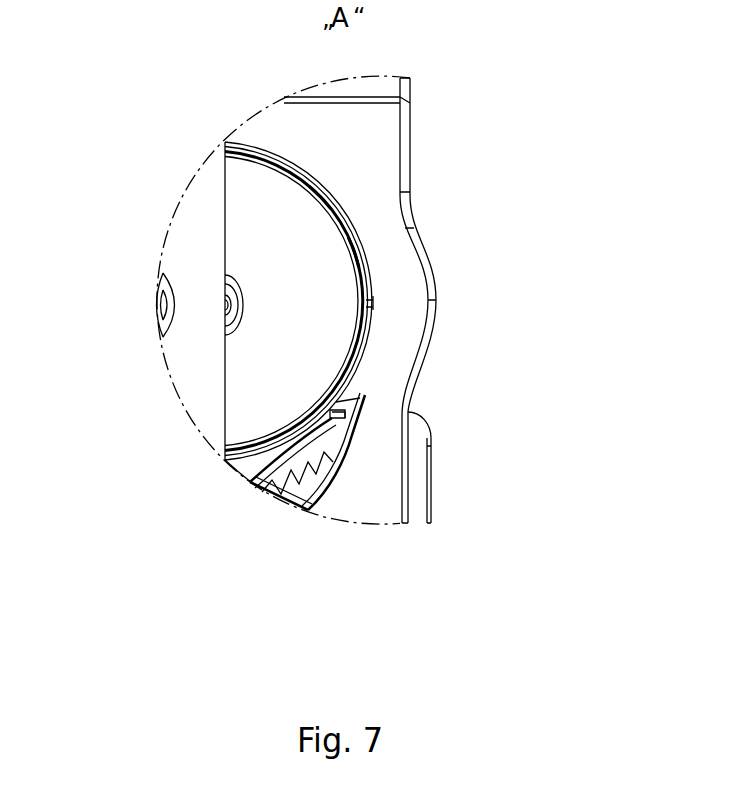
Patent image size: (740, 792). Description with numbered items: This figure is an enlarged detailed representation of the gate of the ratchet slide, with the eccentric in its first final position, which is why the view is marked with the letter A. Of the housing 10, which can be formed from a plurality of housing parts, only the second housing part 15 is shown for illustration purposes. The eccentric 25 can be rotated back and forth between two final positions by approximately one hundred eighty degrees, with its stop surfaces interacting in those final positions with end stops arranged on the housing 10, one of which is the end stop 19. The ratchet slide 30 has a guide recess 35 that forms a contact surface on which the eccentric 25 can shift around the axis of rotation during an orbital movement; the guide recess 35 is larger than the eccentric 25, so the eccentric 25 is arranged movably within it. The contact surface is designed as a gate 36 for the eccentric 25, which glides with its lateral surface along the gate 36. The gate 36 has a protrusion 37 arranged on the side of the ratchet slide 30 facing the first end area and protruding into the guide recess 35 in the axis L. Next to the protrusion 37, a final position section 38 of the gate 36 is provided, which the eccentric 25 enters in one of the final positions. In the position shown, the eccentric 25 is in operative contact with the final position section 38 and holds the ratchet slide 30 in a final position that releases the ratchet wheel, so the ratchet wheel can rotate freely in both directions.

The housing 10 is at (212, 300).
The second housing part 15 is at (183, 344).
The end stop 19 is at (335, 413).
The eccentric 25 is at (274, 234).
The ratchet slide 30 is at (360, 146).
The guide recess 35 is at (258, 467).
The gate 36 is at (404, 375).
The protrusion 37 is at (330, 490).
The final position section 38 is at (374, 300).